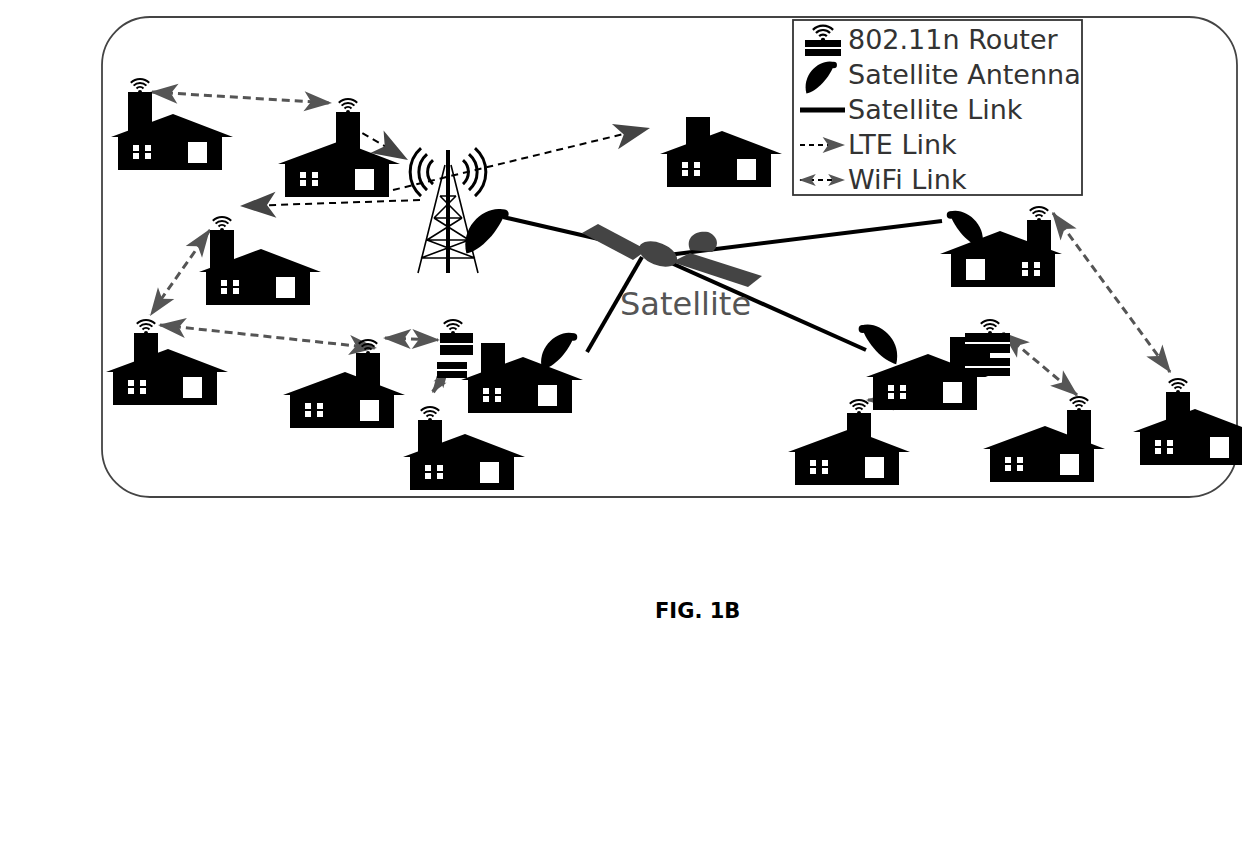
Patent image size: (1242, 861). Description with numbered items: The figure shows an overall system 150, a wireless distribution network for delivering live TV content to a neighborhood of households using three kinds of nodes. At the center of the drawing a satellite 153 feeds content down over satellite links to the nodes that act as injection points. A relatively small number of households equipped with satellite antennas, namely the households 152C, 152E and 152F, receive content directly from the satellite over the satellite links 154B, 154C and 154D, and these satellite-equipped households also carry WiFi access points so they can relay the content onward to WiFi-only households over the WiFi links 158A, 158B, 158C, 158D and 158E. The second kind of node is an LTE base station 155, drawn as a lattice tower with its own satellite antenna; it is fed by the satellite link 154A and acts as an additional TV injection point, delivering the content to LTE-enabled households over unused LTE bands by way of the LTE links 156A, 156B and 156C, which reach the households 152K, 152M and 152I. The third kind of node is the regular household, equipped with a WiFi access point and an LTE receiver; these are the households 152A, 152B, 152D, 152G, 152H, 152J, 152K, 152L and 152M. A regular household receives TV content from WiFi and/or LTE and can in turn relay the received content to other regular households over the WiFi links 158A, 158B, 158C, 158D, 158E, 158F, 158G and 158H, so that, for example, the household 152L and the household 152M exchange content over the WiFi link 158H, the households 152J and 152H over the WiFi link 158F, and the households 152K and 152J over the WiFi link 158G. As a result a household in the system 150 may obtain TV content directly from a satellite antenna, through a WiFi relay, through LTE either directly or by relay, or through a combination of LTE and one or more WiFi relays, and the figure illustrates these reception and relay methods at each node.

The overall system 150 is at (719, 578).
The household 152A is at (1228, 420).
The household 152B is at (1007, 484).
The household equipped with satellite antenna 152C is at (950, 270).
The household 152D is at (882, 488).
The household equipped with satellite antenna 152E is at (865, 370).
The household equipped with satellite antenna 152F is at (578, 387).
The household 152G is at (440, 492).
The household 152H is at (387, 430).
The household 152I is at (742, 130).
The household 152J is at (132, 408).
The household 152K is at (313, 290).
The household 152L is at (133, 172).
The household 152M is at (285, 172).
The satellite 153 is at (648, 240).
The satellite link 154A is at (533, 247).
The satellite link 154B is at (818, 237).
The satellite link 154C is at (738, 315).
The satellite link 154D is at (631, 312).
The LTE base station 155 is at (432, 253).
The LTE link 156A is at (332, 198).
The LTE link 156B is at (455, 113).
The LTE link 156C is at (568, 105).
The WiFi link 158A is at (1105, 290).
The WiFi link 158B is at (1095, 325).
The WiFi link 158C is at (900, 405).
The WiFi link 158D is at (445, 392).
The WiFi link 158E is at (415, 333).
The WiFi link 158F is at (258, 340).
The WiFi link 158G is at (176, 288).
The WiFi link 158H is at (272, 105).